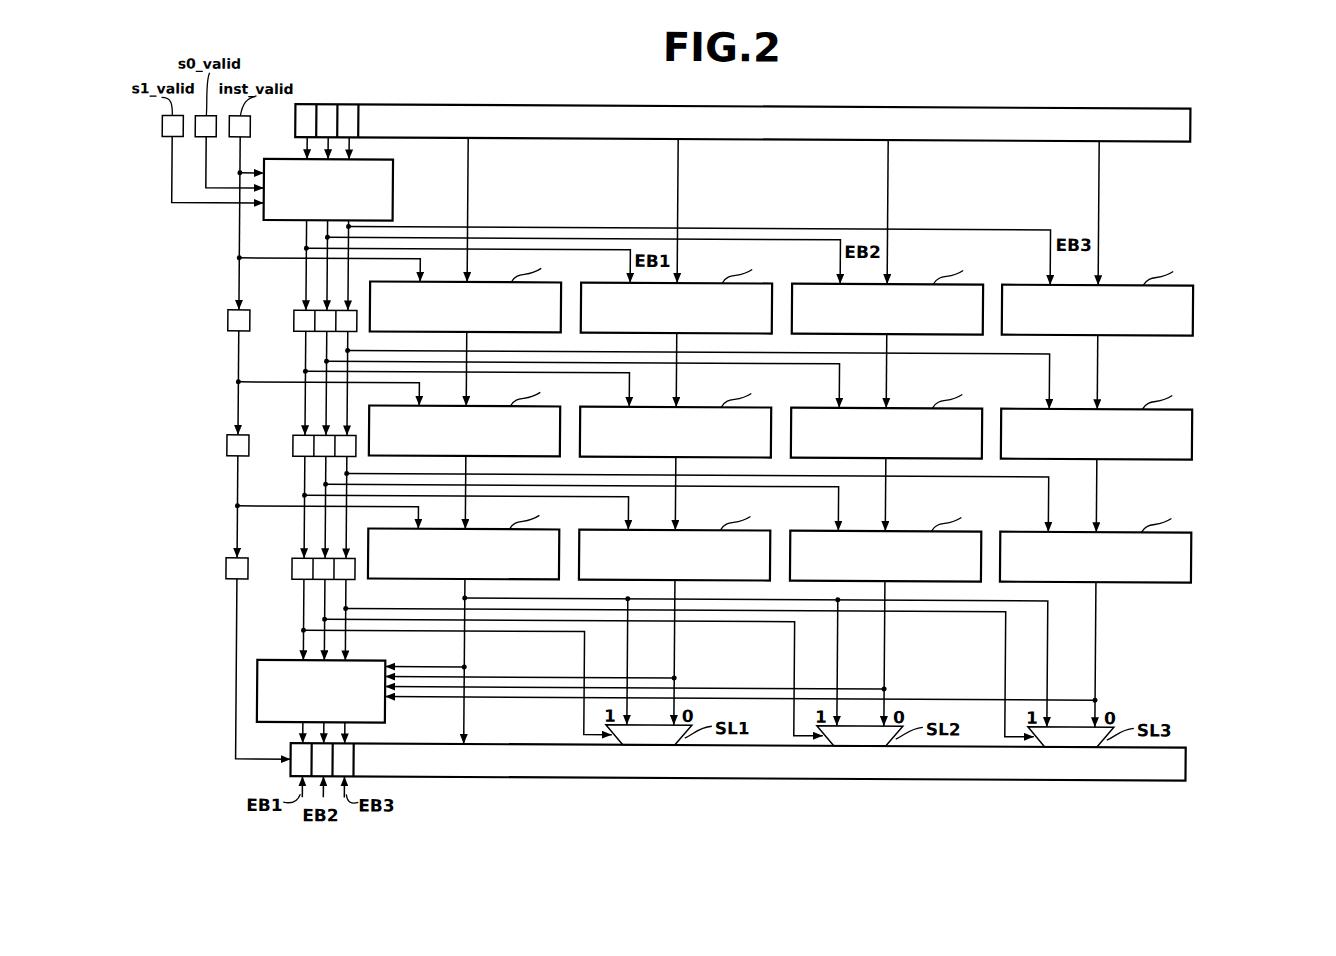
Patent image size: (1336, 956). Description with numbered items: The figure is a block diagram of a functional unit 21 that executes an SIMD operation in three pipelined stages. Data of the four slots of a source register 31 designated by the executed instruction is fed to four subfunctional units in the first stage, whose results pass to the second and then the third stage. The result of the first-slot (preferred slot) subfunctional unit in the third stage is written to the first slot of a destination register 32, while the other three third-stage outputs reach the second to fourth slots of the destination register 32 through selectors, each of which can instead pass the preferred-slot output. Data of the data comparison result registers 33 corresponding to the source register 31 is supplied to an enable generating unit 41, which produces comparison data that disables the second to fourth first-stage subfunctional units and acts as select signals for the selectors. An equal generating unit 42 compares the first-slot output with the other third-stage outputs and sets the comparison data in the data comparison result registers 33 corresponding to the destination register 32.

The functional unit 21 is at (1251, 194).
The source register 31 is at (1189, 121).
The destination register 32 is at (1189, 760).
The data comparison result registers 33 is at (294, 104).
The enable generating unit 41 is at (392, 190).
The equal generating unit 42 is at (272, 661).